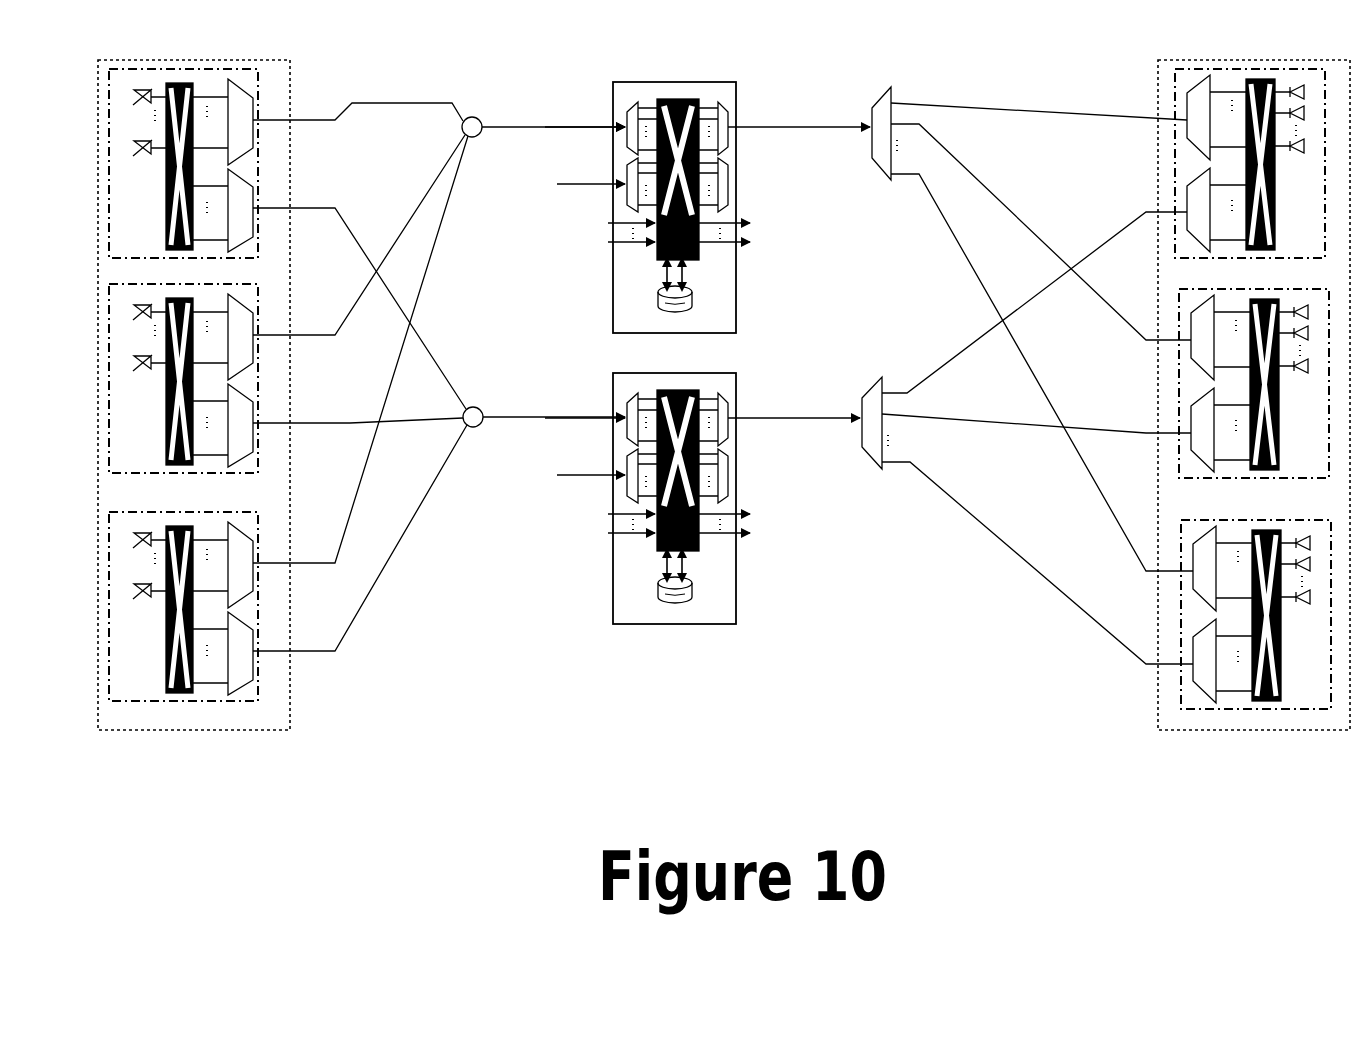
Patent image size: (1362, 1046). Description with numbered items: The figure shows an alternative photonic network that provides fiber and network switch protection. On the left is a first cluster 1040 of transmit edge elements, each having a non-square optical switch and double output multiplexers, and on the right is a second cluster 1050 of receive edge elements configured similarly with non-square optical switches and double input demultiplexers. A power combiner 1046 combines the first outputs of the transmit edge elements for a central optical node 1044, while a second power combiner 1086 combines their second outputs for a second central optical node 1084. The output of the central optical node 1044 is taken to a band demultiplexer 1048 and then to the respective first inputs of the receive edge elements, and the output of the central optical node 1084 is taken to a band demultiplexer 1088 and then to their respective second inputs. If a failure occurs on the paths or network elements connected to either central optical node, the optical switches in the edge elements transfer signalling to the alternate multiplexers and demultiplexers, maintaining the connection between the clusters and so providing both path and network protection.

The first cluster of transmit edge elements 1040 is at (225, 58).
The central optical node 1044 is at (692, 81).
The power combiner 1046 is at (472, 116).
The band demultiplexer 1048 is at (880, 100).
The second cluster of receive edge elements 1050 is at (1280, 60).
The central optical node 1084 is at (700, 372).
The power combiner 1086 is at (475, 406).
The band demultiplexer 1088 is at (874, 386).